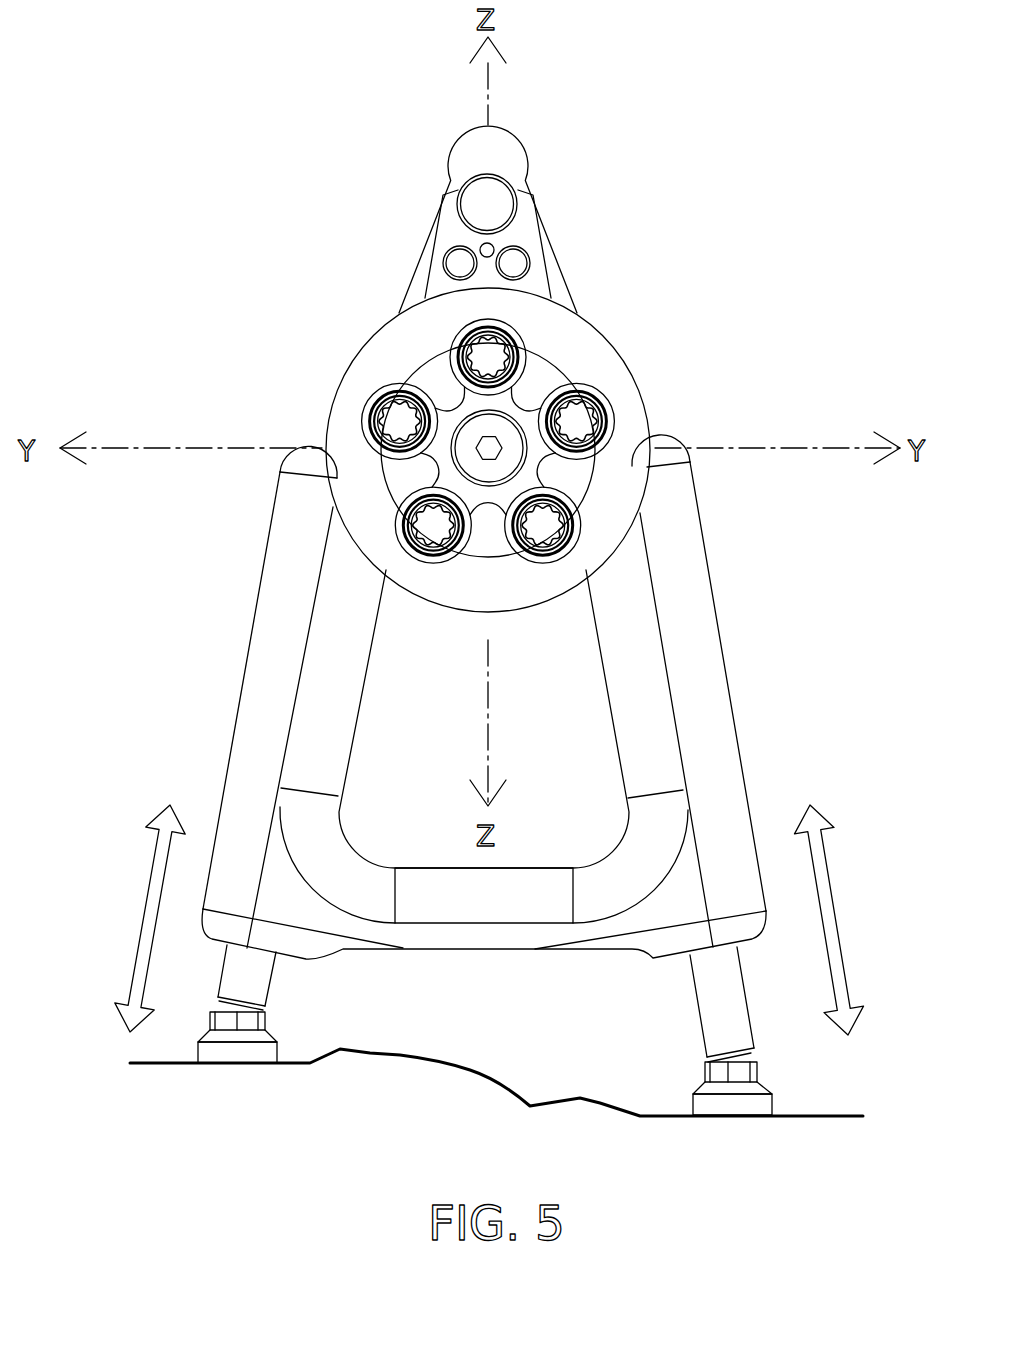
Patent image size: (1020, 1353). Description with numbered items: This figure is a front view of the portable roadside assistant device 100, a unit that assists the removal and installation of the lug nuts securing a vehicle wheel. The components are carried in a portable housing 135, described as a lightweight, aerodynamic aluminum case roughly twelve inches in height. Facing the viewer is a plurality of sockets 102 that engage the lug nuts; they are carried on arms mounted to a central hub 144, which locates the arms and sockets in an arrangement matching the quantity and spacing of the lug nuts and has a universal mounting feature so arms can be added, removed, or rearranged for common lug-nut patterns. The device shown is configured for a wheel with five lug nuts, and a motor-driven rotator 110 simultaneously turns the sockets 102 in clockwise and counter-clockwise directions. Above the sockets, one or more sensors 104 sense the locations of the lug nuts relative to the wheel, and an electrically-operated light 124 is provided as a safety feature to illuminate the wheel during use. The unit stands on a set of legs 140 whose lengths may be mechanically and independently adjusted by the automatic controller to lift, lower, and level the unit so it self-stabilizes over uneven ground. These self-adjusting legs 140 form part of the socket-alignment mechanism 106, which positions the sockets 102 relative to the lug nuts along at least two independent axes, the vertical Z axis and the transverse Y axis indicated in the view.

The portable roadside assistant device 100 is at (697, 112).
The socket-alignment mechanism 106 is at (223, 240).
The electrically-operated light 124 is at (473, 190).
The sensors 104 is at (443, 265).
The central hub 144 is at (420, 367).
The sockets 102 is at (380, 392).
The portable housing 135 is at (612, 343).
The motor-driven rotator 110 is at (615, 400).
The legs 140 is at (240, 964).